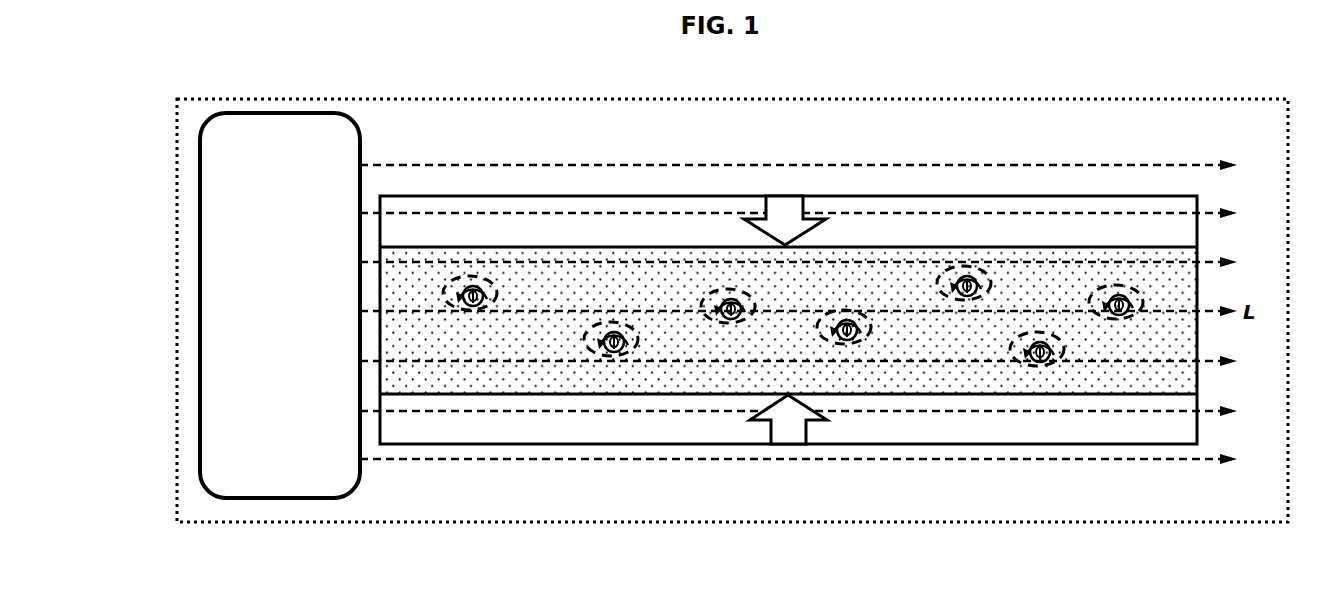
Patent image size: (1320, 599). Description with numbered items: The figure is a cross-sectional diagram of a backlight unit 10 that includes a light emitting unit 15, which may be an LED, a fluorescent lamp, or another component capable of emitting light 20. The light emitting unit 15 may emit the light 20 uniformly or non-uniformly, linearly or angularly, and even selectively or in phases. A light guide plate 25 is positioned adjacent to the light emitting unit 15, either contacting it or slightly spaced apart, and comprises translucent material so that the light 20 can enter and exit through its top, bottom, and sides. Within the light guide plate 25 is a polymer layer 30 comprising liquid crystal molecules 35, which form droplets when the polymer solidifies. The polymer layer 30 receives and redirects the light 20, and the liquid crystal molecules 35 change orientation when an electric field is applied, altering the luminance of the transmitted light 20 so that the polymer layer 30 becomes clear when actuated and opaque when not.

The backlight unit 10 is at (177, 268).
The light emitting unit 15 is at (291, 320).
The light 20 is at (393, 165).
The light guide plate 25 is at (497, 447).
The polymer layer 30 is at (733, 394).
The liquid crystal molecules 35 is at (587, 314).